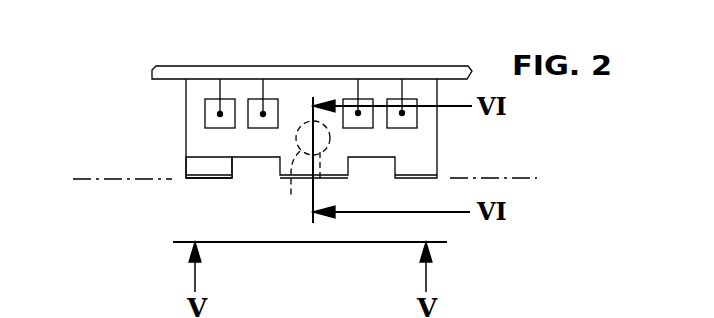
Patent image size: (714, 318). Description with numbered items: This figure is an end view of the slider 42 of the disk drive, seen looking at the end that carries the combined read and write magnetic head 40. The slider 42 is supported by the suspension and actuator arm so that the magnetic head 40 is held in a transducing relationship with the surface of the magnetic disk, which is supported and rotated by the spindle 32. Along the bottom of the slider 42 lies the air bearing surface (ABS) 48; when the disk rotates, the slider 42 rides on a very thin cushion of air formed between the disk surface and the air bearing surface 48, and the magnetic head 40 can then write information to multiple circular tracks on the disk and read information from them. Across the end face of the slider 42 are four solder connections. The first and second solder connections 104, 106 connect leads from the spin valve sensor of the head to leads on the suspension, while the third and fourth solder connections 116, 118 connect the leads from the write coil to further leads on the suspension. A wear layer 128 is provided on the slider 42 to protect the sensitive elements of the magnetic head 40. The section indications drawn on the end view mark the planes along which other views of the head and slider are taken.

The slider 42 is at (186, 112).
The wear layer 128 is at (195, 181).
The first solder connection 104 is at (205, 99).
The third solder connection 116 is at (248, 99).
The fourth solder connection 118 is at (345, 99).
The second solder connection 106 is at (388, 99).
The combined read and write magnetic head 40 is at (287, 196).
The air bearing surface (ABS) 48 is at (101, 183).
The spindle 32 is at (687, 311).